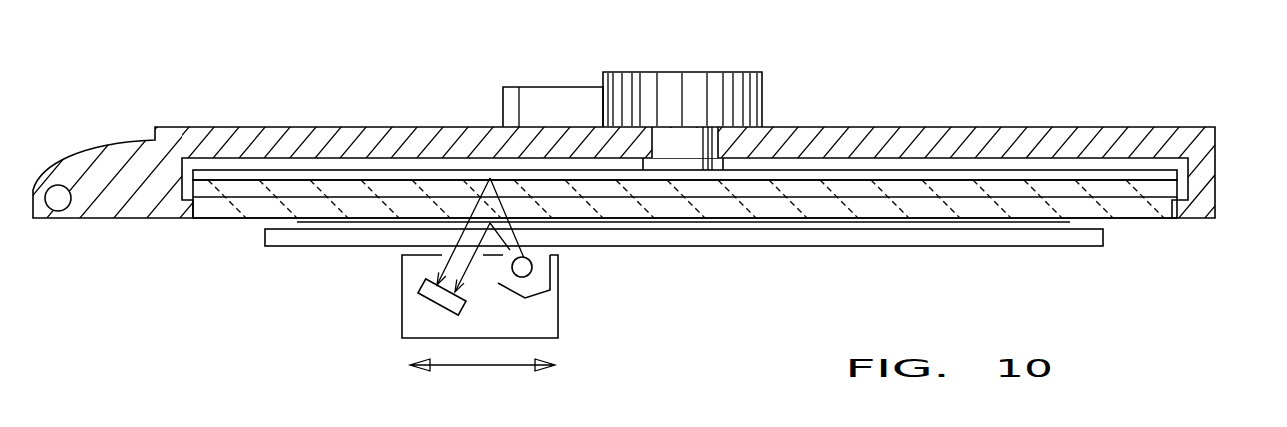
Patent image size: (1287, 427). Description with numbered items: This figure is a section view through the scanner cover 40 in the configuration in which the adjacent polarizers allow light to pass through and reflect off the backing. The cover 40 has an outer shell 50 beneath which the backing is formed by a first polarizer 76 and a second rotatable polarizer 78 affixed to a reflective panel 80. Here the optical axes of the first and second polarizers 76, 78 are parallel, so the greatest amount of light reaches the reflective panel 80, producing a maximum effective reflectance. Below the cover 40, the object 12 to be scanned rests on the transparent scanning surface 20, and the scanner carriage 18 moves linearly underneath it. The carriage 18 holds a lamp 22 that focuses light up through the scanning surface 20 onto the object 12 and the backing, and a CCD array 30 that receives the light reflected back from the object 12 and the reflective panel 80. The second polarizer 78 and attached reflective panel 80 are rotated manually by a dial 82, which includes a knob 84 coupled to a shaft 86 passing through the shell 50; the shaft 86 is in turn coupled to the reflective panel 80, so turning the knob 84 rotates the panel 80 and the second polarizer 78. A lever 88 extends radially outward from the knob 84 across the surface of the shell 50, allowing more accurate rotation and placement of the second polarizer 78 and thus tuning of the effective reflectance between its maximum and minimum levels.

The cover 40 is at (125, 76).
The shell 50 is at (208, 131).
The first polarizer 76 is at (218, 214).
The second rotatable polarizer 78 is at (1120, 190).
The reflective panel 80 is at (1173, 176).
The object 12 is at (712, 223).
The scanning surface 20 is at (302, 247).
The dial 82 is at (611, 64).
The knob 84 is at (763, 95).
The shaft 86 is at (655, 143).
The lever 88 is at (552, 90).
The scanner carriage 18 is at (402, 326).
The CCD array 30 is at (458, 304).
The lamp 22 is at (528, 268).